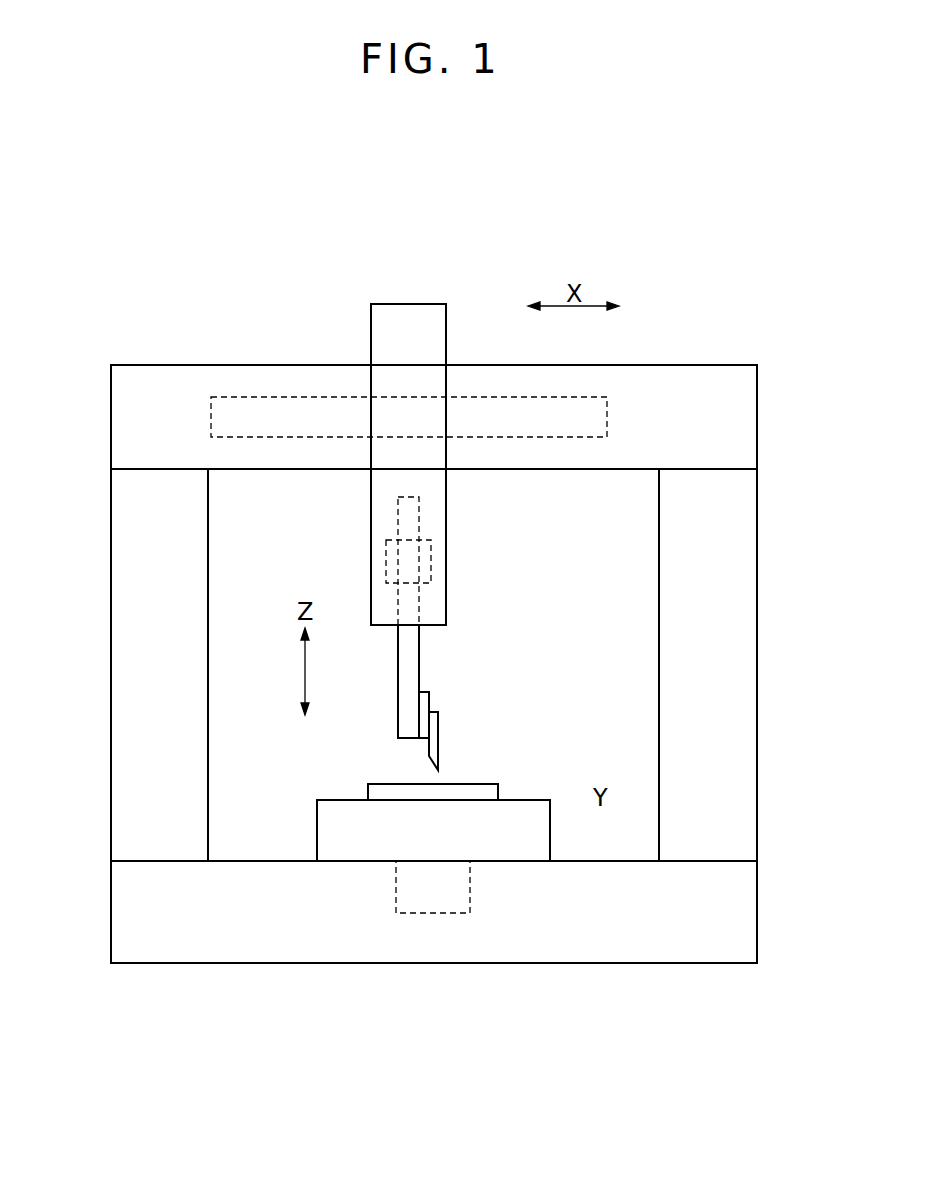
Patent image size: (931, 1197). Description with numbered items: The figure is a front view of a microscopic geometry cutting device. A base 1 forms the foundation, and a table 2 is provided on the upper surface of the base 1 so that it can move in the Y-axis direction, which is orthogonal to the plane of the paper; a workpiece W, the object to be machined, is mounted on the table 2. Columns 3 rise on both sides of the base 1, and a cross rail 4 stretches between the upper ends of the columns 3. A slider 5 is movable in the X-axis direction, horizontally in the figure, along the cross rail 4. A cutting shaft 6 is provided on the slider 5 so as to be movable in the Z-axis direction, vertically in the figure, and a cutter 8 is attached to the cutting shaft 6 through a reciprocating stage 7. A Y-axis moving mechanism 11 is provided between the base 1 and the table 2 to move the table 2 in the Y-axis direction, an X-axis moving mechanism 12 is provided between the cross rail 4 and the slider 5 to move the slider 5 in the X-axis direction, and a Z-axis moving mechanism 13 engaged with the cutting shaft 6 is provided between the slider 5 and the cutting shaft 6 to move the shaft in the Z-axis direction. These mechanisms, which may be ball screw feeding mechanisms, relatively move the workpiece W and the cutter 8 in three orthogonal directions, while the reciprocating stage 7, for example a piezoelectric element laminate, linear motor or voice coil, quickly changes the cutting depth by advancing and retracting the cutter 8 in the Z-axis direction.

The base 1 is at (628, 963).
The table 2 is at (317, 835).
The columns 3 is at (111, 705).
The cross rail 4 is at (143, 365).
The slider 5 is at (405, 304).
The cutting shaft 6 is at (420, 657).
The reciprocating stage 7 is at (427, 688).
The cutter 8 is at (438, 742).
The Y-axis moving mechanism 11 is at (436, 913).
The X-axis moving mechanism 12 is at (300, 397).
The Z-axis moving mechanism 13 is at (431, 562).
The workpiece W is at (378, 784).